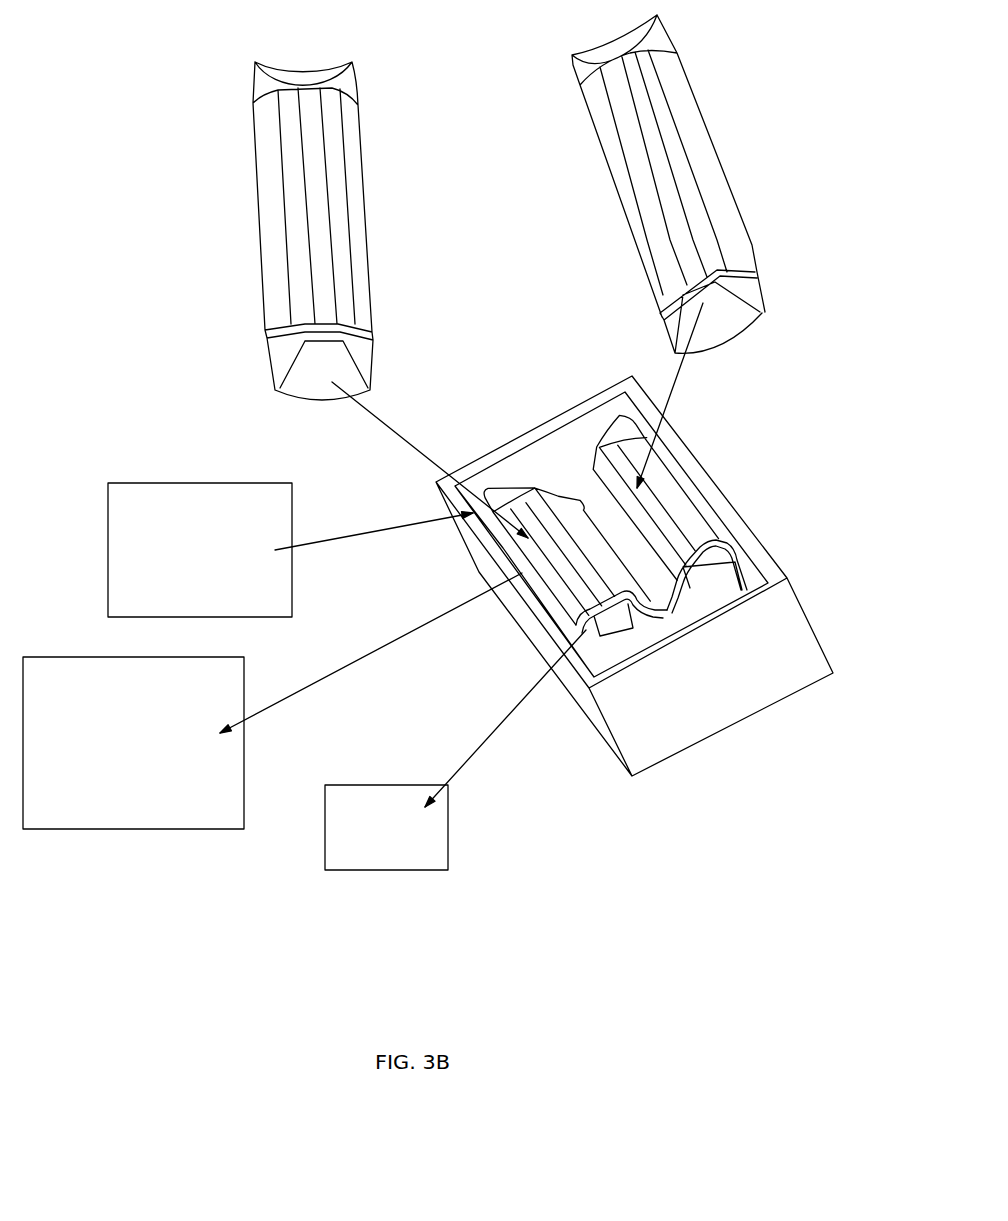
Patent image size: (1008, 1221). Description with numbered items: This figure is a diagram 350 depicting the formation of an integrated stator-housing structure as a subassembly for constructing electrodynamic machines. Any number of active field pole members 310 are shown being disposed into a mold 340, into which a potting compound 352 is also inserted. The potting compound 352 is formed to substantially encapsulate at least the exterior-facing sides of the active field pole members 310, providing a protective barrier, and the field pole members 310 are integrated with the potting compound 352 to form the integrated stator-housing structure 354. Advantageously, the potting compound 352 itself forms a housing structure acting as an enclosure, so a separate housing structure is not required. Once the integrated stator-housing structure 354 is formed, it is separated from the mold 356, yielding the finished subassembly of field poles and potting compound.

The active field pole member 310 is at (407, 339).
The mold 340 is at (717, 481).
The diagram 350 is at (793, 117).
The potting compound 352 is at (293, 508).
The integrated stator-housing structure 354 is at (247, 677).
The mold 356 is at (448, 817).